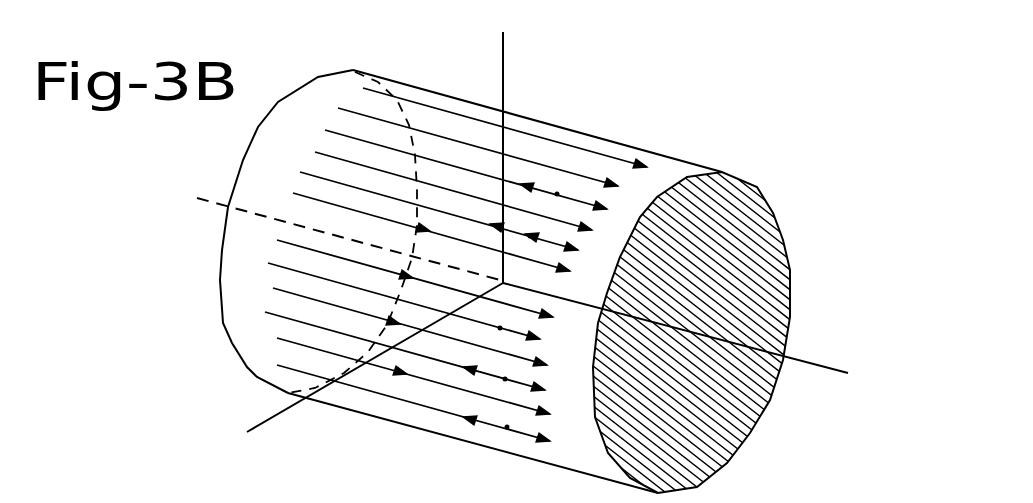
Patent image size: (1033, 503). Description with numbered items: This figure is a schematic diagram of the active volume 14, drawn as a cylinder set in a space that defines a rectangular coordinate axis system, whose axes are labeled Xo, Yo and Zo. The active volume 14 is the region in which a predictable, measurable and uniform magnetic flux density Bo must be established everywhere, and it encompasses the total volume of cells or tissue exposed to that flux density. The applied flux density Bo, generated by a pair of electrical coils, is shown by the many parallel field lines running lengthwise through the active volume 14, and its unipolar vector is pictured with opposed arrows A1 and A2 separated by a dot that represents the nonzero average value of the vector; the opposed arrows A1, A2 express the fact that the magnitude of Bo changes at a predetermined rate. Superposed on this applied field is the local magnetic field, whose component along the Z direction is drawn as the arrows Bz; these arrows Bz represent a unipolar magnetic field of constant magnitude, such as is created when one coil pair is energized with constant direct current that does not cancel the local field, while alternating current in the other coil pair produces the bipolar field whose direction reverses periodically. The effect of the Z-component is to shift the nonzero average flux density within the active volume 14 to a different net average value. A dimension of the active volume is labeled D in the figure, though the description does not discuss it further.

The active volume 14 is at (633, 128).
The applied magnetic flux density Bo is at (400, 197).
The unipolar magnetic field Bz is at (497, 193).
The X axis Xo is at (487, 144).
The Y axis Yo is at (350, 315).
The Z axis Zo is at (682, 328).
The arrow A1 is at (550, 145).
The arrow A2 is at (637, 162).
The diameter D is at (593, 155).